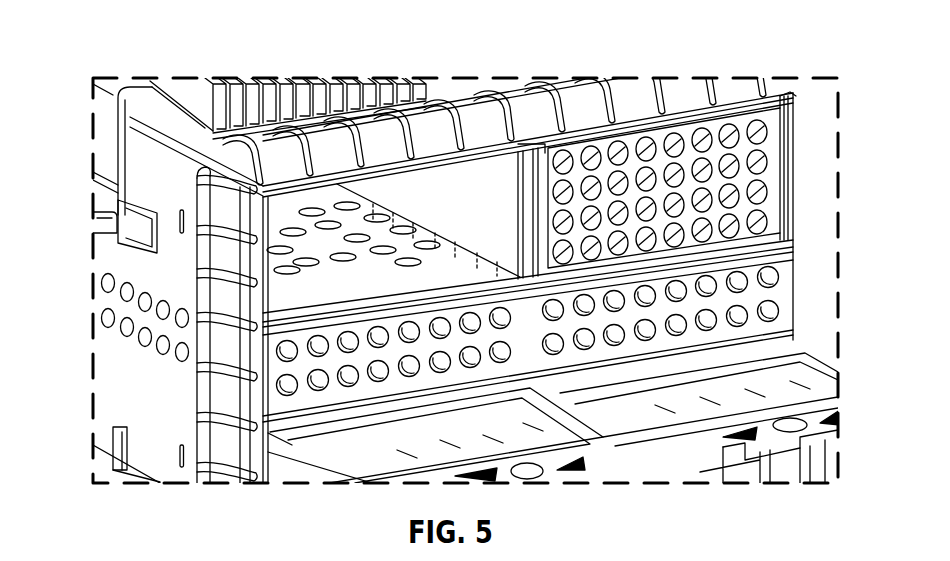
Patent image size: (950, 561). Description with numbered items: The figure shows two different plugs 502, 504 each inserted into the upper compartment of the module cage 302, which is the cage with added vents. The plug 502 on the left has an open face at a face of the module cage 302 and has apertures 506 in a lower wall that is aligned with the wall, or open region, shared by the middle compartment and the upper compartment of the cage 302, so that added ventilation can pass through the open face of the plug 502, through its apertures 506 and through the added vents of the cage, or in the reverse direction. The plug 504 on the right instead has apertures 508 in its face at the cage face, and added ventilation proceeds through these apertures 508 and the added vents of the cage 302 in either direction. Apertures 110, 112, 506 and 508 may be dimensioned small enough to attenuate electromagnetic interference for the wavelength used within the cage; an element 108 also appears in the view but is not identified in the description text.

The heat sink 108 is at (265, 88).
The apertures 110 is at (778, 270).
The apertures 112 is at (103, 326).
The module cage 302 is at (97, 153).
The plug 502 is at (443, 174).
The plug 504 is at (770, 146).
The apertures 506 is at (392, 249).
The apertures 508 is at (770, 197).